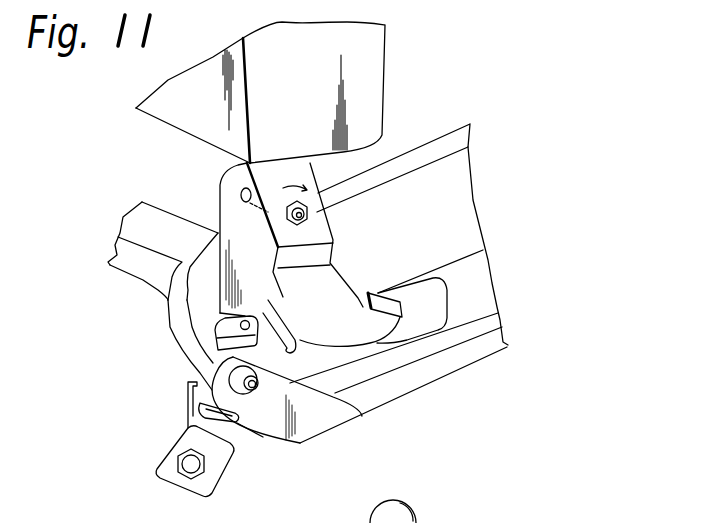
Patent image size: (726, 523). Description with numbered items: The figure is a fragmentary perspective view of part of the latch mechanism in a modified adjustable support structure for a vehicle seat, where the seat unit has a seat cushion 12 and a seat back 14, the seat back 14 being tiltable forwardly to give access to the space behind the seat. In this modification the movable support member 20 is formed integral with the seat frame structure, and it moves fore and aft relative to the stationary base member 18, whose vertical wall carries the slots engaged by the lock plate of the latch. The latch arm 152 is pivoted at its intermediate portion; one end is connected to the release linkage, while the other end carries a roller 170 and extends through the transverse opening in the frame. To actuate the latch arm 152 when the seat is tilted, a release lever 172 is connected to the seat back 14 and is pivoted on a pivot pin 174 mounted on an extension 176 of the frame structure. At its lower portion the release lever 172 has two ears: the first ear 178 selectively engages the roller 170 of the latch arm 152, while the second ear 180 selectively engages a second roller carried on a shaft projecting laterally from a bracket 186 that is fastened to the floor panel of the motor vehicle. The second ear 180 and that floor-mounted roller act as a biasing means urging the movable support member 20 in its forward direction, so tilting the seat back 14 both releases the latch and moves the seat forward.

The seat cushion 12 is at (458, 89).
The seat back 14 is at (447, 49).
The stationary base member 18 is at (187, 405).
The movable support member 20 is at (187, 428).
The latch arm 152 is at (213, 350).
The roller 170 is at (280, 382).
The release lever 172 is at (333, 238).
The pivot pin 174 is at (310, 212).
The extension 176 is at (220, 185).
The first ear 178 is at (292, 352).
The second ear 180 is at (373, 292).
The bracket 186 is at (267, 437).